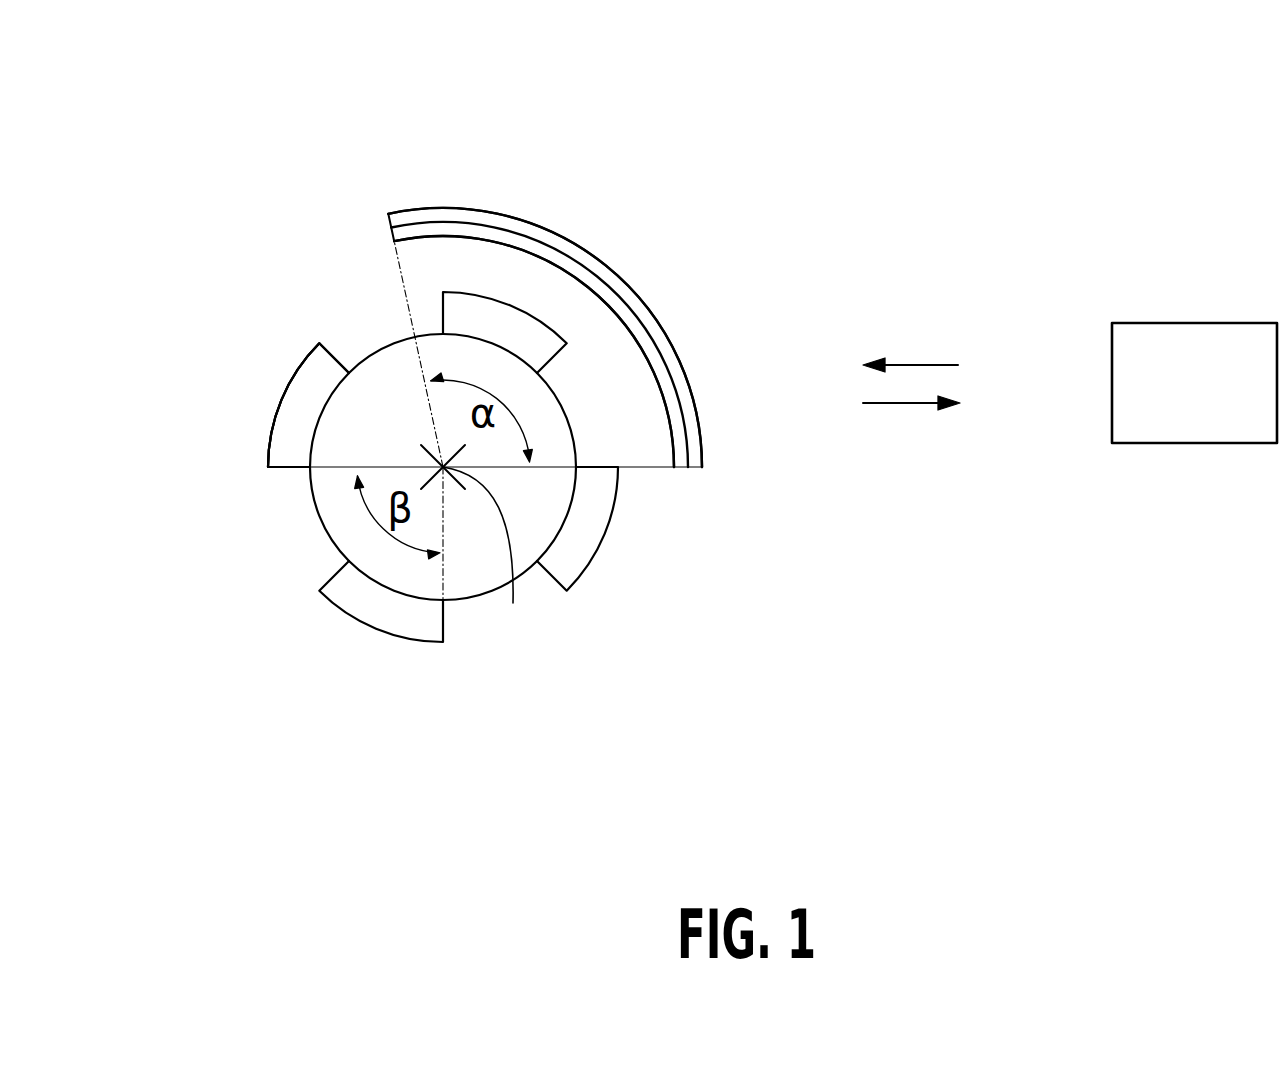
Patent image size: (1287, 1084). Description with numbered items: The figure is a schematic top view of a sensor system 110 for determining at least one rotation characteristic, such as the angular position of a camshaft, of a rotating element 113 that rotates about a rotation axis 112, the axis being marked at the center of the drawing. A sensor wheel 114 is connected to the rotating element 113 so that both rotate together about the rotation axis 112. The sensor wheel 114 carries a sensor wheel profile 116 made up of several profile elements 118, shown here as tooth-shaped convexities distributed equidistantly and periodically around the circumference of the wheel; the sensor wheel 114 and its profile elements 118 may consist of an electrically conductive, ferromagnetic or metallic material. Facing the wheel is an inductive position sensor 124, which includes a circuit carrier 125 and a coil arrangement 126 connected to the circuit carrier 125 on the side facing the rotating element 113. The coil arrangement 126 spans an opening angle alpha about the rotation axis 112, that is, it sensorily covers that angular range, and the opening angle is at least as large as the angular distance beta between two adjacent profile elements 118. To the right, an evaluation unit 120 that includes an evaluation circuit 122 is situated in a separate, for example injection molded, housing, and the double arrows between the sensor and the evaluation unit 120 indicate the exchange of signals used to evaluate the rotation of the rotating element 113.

The sensor system 110 is at (921, 133).
The rotation axis 112 is at (513, 603).
The rotating element 113 is at (343, 533).
The sensor wheel 114 is at (365, 328).
The sensor wheel profile 116 is at (280, 362).
The profile element 118 is at (292, 425).
The evaluation unit 120 is at (1198, 467).
The evaluation circuit 122 is at (1197, 343).
The inductive position sensor 124 is at (497, 195).
The circuit carrier 125 is at (605, 272).
The coil arrangement 126 is at (673, 413).